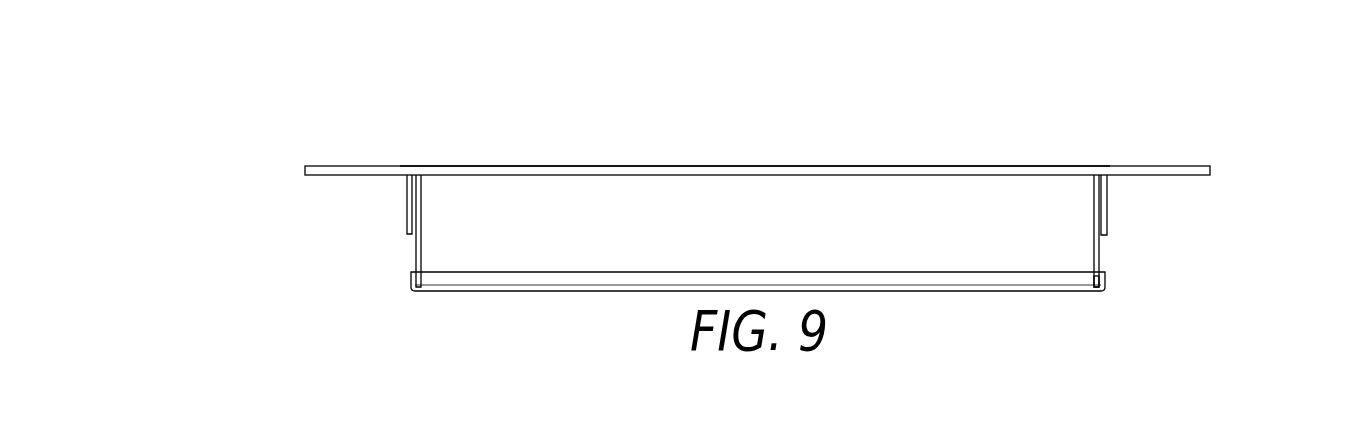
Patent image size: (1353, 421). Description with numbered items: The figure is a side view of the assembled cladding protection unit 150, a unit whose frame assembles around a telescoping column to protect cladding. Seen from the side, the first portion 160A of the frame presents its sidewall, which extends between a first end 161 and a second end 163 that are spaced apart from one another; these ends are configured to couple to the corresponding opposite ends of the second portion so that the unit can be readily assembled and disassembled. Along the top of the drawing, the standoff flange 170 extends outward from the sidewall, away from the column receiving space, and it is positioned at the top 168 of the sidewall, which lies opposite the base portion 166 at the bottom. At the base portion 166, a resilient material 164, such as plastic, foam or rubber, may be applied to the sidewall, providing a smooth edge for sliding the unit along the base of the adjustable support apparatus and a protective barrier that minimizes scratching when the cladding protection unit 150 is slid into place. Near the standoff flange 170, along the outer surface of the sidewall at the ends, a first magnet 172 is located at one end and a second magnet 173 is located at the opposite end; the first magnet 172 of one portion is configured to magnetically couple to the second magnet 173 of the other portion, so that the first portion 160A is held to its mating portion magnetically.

The cladding protection unit 150 is at (1230, 92).
The first portion 160A is at (262, 229).
The first end 161 is at (362, 269).
The second end 163 is at (1132, 251).
The resilient material 164 is at (1107, 279).
The base portion 166 is at (1067, 292).
The top 168 is at (1052, 166).
The standoff flange 170 is at (1212, 171).
The first magnet 172 is at (407, 197).
The second magnet 173 is at (1108, 197).